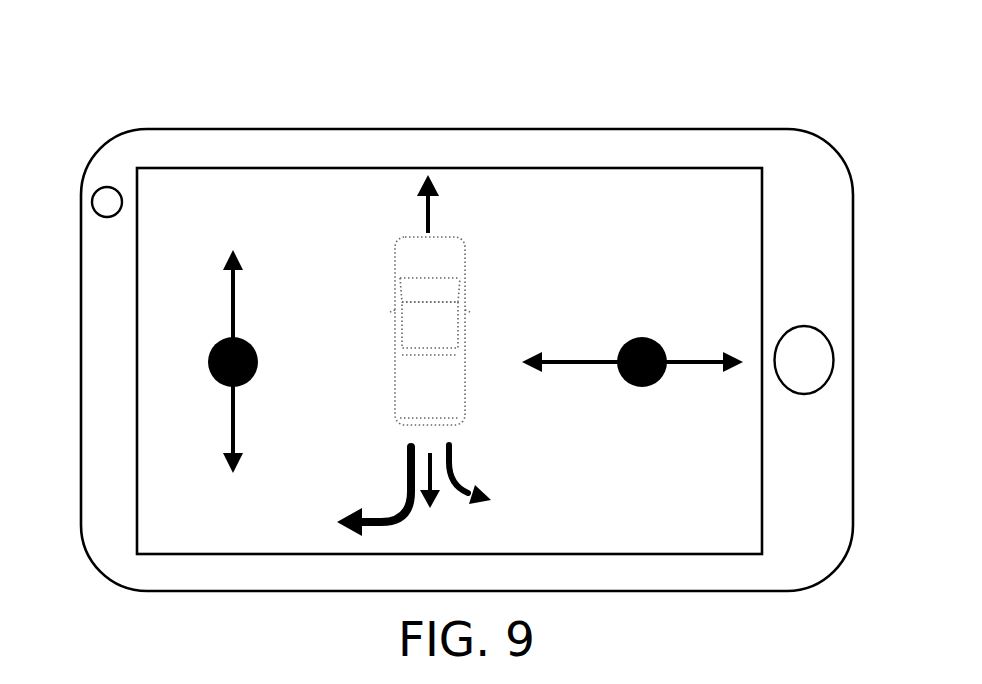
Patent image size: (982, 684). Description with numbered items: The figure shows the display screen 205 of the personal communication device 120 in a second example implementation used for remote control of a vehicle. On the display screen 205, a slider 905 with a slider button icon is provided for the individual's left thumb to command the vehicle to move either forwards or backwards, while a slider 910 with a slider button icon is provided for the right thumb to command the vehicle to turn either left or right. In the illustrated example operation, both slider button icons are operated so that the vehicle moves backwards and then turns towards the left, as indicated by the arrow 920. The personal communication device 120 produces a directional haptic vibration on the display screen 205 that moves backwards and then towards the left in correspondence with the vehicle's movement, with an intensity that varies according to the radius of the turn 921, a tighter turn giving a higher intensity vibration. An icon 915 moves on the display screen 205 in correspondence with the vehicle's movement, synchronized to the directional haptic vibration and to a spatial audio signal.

The personal communication device 120 is at (315, 130).
The display screen 205 is at (608, 208).
The slider 905 is at (278, 328).
The slider 910 is at (665, 320).
The icon 915 is at (477, 303).
The arrow 920 is at (409, 490).
The turn 921 is at (410, 513).